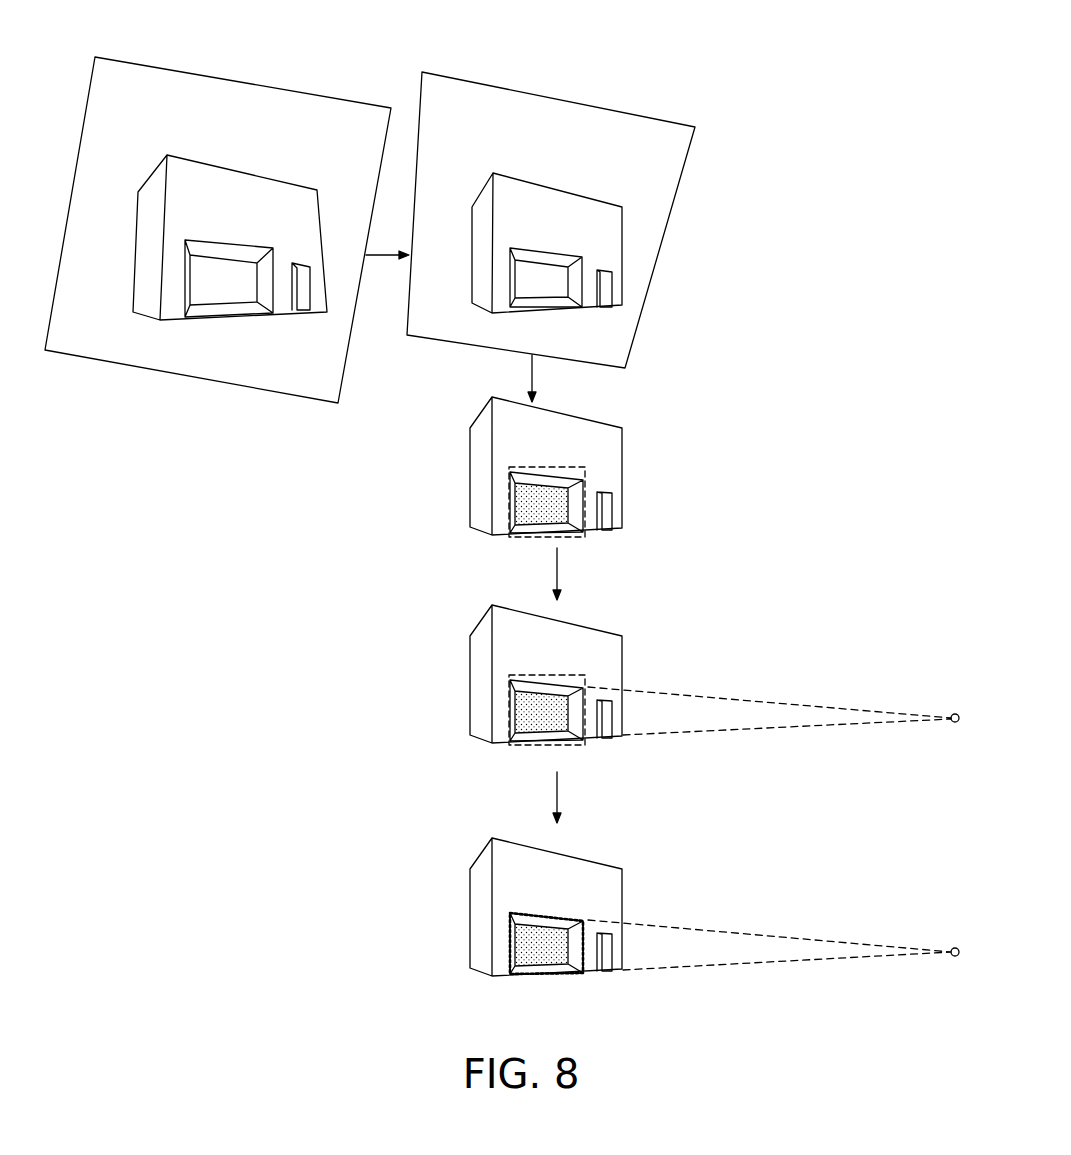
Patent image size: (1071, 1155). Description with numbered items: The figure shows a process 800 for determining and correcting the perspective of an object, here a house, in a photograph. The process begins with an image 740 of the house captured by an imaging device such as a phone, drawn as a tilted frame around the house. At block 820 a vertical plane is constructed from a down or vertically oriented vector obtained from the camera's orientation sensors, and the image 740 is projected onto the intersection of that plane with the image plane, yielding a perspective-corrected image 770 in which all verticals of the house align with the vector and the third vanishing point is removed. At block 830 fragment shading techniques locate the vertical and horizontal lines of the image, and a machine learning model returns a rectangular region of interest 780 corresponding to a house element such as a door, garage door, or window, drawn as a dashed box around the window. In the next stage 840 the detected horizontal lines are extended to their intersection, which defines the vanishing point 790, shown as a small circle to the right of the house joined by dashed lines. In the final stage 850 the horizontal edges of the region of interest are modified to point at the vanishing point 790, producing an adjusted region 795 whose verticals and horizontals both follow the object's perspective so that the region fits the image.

The image 740 is at (203, 162).
The rectified building image 770 is at (552, 183).
The region of interest 780 is at (557, 468).
The vanishing point 790 is at (955, 714).
The refined window region 795 is at (563, 915).
The process 800 is at (746, 87).
The block 820 is at (676, 280).
The block 830 is at (648, 487).
The vanishing point estimation step 840 is at (648, 650).
The refinement step 850 is at (648, 888).